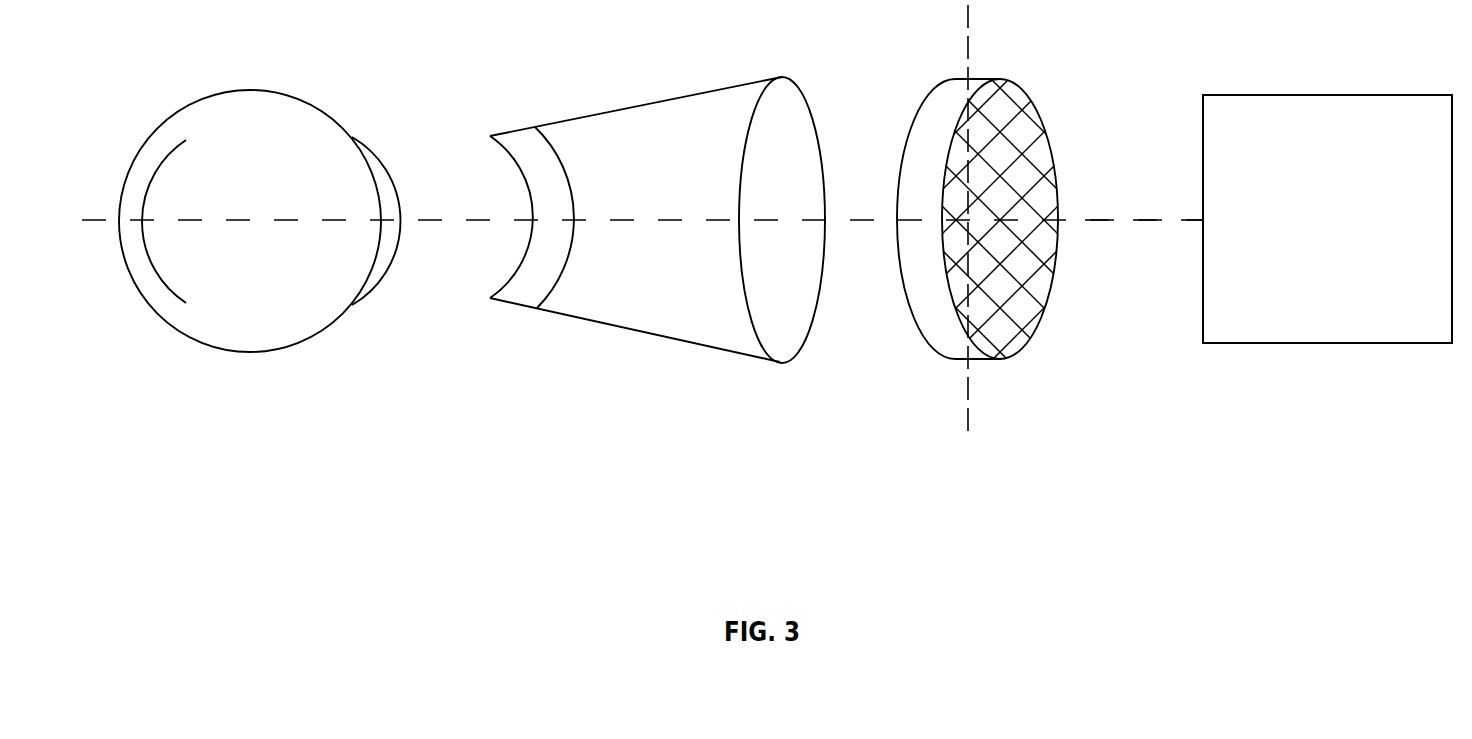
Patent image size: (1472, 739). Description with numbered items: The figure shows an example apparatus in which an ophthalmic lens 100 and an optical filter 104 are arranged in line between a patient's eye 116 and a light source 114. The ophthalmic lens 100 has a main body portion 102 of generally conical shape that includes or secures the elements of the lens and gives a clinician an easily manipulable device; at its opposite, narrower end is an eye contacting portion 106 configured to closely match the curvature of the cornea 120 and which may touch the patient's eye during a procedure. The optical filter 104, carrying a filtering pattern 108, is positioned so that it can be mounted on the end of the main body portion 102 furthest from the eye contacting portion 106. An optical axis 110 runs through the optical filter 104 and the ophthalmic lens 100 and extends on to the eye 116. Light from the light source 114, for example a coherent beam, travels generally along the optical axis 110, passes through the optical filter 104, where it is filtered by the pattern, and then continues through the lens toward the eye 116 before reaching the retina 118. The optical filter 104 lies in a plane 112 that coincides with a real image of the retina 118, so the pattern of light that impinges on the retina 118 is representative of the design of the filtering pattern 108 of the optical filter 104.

The ophthalmic lens 100 is at (621, 205).
The main body portion 102 is at (667, 98).
The optical filter 104 is at (898, 360).
The eye contacting portion 106 is at (510, 304).
The filtering pattern 108 is at (1028, 292).
The optical axis 110 is at (1085, 218).
The plane 112 is at (960, 400).
The light source 114 is at (1328, 94).
The eye 116 is at (284, 86).
The retina 118 is at (171, 143).
The cornea 120 is at (356, 306).